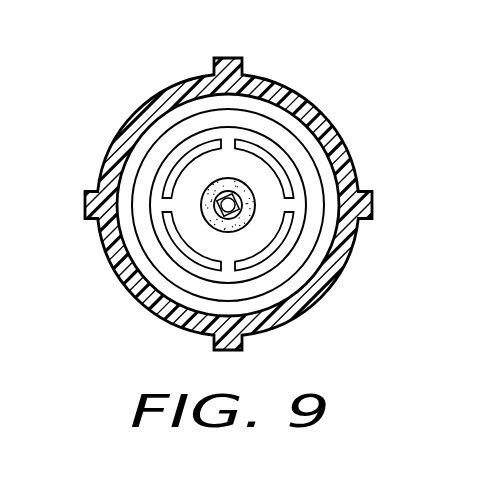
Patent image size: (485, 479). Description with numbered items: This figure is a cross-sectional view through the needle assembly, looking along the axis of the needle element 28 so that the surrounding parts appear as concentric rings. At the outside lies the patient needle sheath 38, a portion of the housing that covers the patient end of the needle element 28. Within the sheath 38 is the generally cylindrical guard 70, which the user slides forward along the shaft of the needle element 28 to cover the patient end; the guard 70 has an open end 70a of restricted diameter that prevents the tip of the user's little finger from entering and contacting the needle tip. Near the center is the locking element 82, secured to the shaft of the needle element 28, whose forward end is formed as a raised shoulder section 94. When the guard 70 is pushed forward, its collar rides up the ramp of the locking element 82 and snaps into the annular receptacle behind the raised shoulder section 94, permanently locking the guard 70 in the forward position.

The patient needle sheath 38 is at (310, 93).
The guard 70 is at (305, 159).
The open end 70a is at (183, 245).
The raised shoulder section 94 is at (183, 168).
The locking element 82 is at (262, 228).
The needle element 28 is at (262, 167).